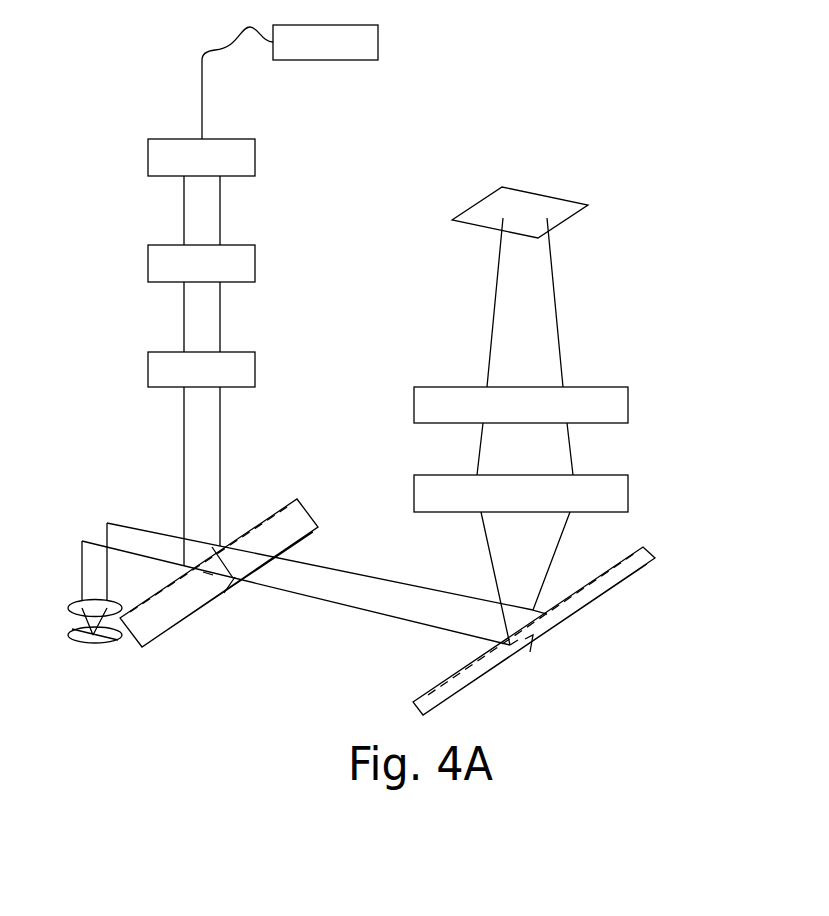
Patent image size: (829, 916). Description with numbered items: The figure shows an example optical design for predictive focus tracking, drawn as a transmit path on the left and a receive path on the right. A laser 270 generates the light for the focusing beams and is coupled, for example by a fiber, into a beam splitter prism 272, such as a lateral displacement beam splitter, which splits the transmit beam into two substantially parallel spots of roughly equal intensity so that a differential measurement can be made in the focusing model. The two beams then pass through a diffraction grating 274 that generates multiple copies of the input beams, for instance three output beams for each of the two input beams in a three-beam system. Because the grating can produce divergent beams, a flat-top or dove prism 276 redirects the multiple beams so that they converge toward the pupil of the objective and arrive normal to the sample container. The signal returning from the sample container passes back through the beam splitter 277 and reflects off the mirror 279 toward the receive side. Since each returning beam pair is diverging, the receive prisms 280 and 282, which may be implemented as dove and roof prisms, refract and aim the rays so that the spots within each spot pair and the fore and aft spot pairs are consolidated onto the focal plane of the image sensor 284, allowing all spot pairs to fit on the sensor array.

The laser 270 is at (346, 54).
The beam splitter prism 272 is at (223, 169).
The diffraction grating 274 is at (223, 276).
The dove prism 276 is at (223, 381).
The beam splitter 277 is at (318, 522).
The mirror 279 is at (655, 555).
The receive prism 280 is at (542, 506).
The receive prism 282 is at (542, 417).
The image sensor 284 is at (545, 193).